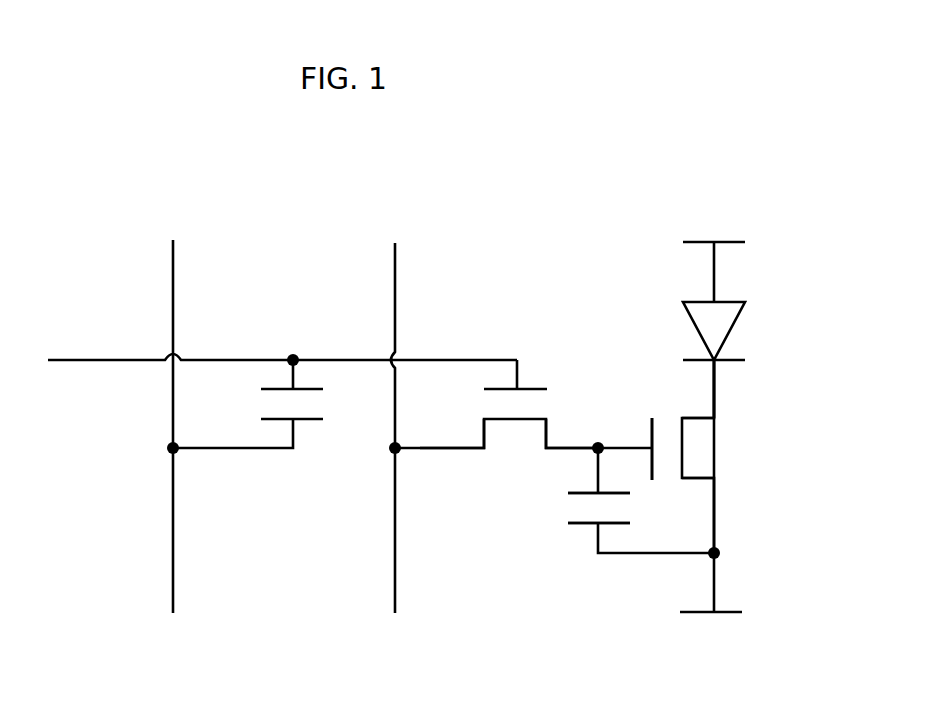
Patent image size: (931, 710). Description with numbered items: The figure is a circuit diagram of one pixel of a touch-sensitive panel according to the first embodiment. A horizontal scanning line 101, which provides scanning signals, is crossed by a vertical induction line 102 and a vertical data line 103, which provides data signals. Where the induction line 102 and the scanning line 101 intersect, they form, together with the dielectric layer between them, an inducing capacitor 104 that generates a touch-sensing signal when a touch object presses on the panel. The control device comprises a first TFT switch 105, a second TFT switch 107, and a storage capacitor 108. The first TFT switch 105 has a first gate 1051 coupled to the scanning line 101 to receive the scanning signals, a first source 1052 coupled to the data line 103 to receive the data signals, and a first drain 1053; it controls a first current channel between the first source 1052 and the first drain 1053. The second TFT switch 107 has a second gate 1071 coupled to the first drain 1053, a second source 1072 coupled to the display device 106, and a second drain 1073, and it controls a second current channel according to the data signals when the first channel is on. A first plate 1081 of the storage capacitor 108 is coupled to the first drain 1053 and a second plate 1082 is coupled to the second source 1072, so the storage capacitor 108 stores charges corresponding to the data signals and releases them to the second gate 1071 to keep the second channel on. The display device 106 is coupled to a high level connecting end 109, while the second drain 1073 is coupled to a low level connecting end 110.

The scanning line 101 is at (65, 357).
The induction line 102 is at (173, 240).
The data line 103 is at (395, 243).
The inducing capacitor 104 is at (311, 440).
The first TFT switch 105 is at (514, 451).
The first gate 1051 is at (520, 366).
The first source 1052 is at (463, 445).
The first drain 1053 is at (560, 445).
The display device 106 is at (668, 308).
The second TFT switch 107 is at (719, 448).
The second gate 1071 is at (628, 443).
The second source 1072 is at (717, 400).
The second drain 1073 is at (715, 496).
The storage capacitor 108 is at (573, 542).
The first plate 1081 is at (594, 475).
The second plate 1082 is at (608, 538).
The high level connecting end 109 is at (692, 238).
The low level connecting end 110 is at (697, 615).